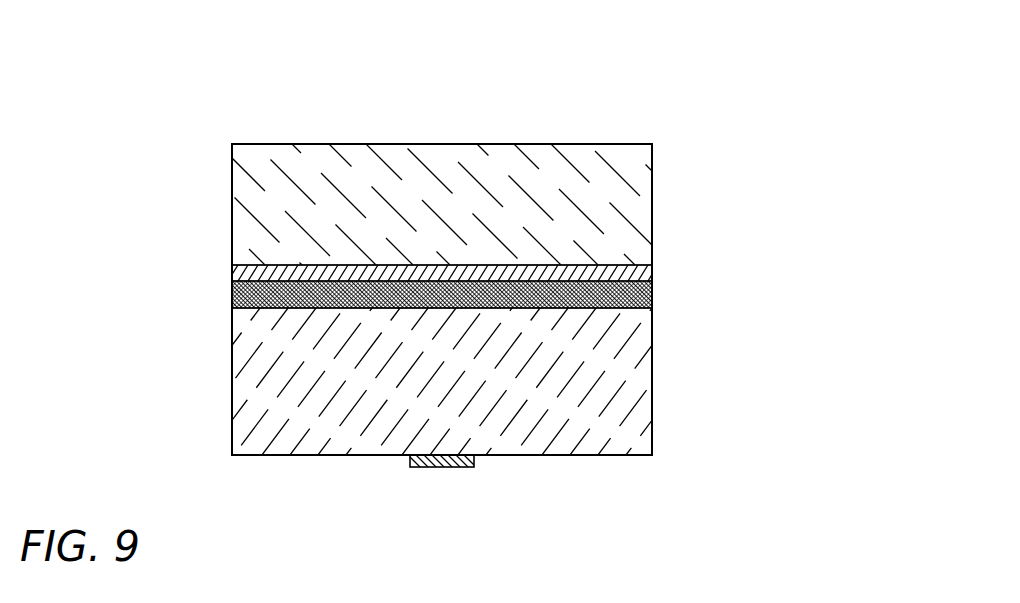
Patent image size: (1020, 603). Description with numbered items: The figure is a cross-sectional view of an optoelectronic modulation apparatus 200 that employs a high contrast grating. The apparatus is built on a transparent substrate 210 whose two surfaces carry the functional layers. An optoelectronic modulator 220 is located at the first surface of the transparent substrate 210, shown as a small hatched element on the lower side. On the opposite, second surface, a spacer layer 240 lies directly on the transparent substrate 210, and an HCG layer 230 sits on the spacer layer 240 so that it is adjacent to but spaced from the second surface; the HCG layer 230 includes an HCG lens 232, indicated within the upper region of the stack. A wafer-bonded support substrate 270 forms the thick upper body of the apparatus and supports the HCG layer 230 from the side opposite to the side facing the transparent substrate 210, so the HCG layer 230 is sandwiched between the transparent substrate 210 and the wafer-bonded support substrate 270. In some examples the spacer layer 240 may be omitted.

The optoelectronic modulation apparatus 200 is at (739, 48).
The wafer-bonded support substrate 270 is at (652, 205).
The HCG lens 232 is at (512, 240).
The HCG layer 230 is at (232, 272).
The spacer layer 240 is at (652, 293).
The transparent substrate 210 is at (652, 380).
The optoelectronic modulator 220 is at (442, 467).